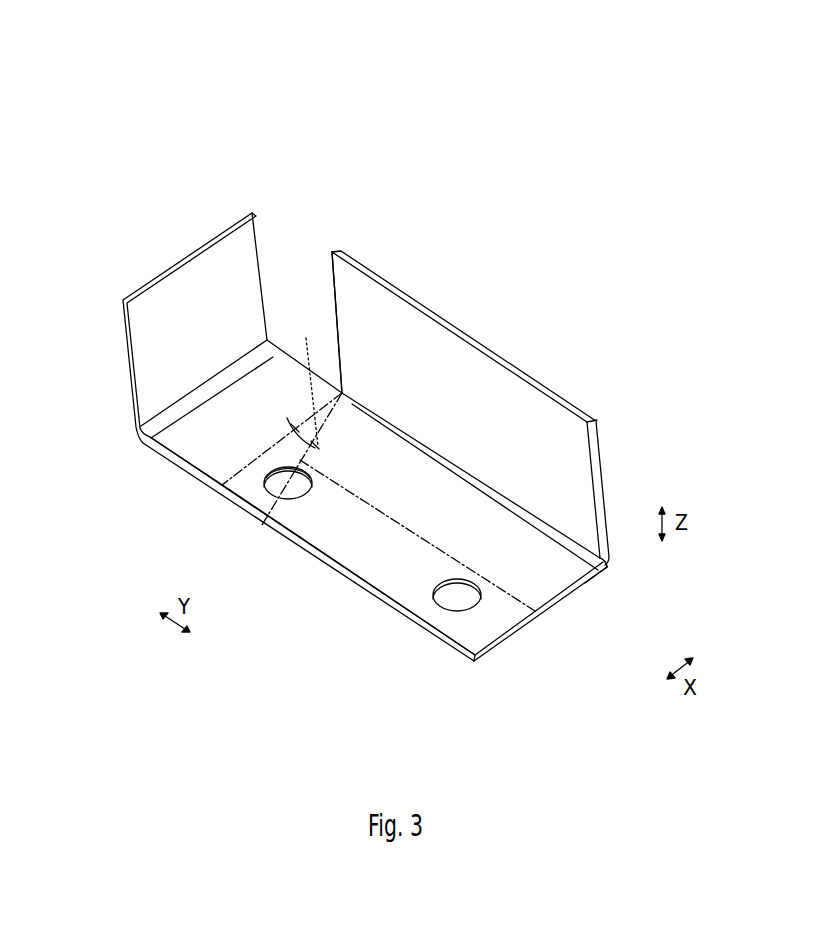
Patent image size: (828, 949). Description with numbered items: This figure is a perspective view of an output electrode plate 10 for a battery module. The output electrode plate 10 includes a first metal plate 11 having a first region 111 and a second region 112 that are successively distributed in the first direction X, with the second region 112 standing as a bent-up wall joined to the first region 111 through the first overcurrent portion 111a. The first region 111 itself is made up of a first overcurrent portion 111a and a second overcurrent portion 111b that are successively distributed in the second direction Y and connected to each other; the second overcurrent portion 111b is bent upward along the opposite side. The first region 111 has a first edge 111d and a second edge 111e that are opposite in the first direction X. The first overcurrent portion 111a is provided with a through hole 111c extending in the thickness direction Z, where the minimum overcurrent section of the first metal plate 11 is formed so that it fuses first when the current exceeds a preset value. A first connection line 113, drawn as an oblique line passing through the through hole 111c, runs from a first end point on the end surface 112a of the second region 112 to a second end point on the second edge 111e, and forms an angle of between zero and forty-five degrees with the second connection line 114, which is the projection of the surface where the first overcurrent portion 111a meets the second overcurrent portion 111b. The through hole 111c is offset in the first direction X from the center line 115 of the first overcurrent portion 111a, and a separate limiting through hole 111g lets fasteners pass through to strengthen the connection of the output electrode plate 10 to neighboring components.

The output electrode plate 10 is at (452, 43).
The first metal plate 11 is at (97, 253).
The first region 111 is at (110, 497).
The first overcurrent portion 111a is at (250, 504).
The second overcurrent portion 111b is at (190, 457).
The through hole 111c is at (298, 486).
The first edge 111d is at (600, 572).
The second edge 111e is at (397, 607).
The limiting through hole 111g is at (458, 600).
The second region 112 is at (517, 397).
The end surface 112a is at (330, 268).
The first connection line 113 is at (273, 503).
The second connection line 114 is at (308, 379).
The center line 115 is at (527, 603).